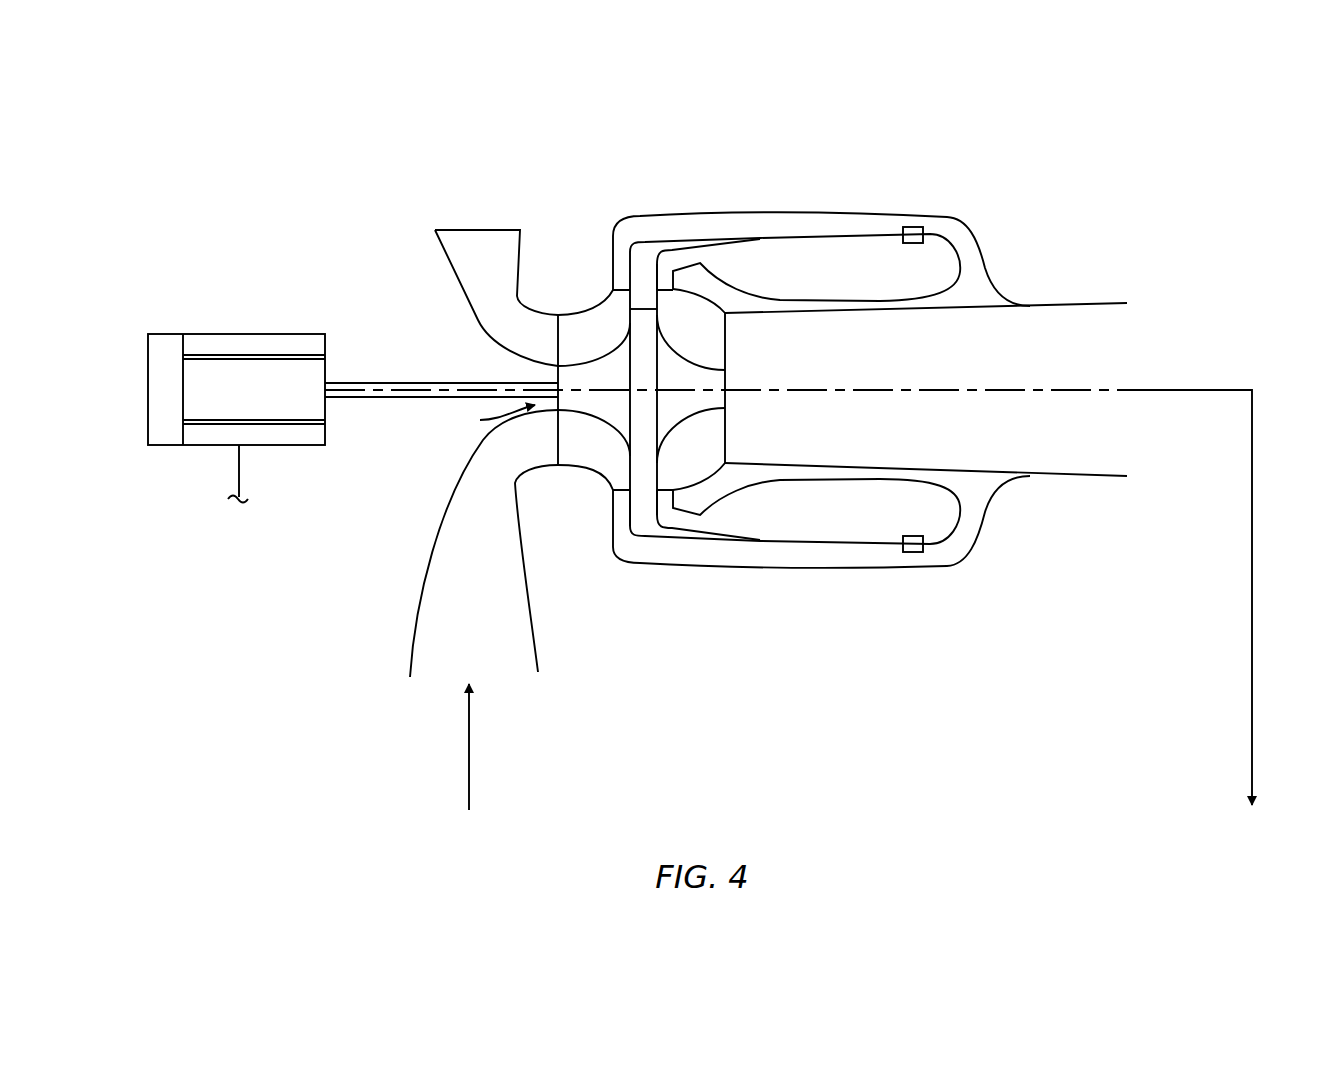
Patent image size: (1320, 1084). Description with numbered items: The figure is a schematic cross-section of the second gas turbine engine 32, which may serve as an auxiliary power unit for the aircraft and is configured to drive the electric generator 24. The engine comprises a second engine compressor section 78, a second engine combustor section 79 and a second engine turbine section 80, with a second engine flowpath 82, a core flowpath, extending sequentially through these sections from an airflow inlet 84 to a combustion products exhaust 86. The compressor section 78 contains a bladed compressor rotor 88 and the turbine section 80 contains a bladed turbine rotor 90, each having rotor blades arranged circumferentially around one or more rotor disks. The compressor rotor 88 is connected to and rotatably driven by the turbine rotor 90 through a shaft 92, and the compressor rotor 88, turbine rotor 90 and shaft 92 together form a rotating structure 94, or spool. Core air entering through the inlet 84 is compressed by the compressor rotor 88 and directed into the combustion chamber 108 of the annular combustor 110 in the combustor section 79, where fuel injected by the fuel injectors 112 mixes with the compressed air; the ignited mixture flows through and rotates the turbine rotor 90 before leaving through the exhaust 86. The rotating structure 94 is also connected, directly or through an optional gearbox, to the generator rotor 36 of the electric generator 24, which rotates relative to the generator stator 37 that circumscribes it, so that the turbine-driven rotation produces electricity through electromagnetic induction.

The electric generator 24 is at (183, 334).
The second gas turbine engine 32 is at (1150, 179).
The generator rotor 36 is at (255, 403).
The generator stator 37 is at (252, 334).
The second engine compressor section 78 is at (586, 303).
The second engine combustor section 79 is at (885, 224).
The second engine turbine section 80 is at (718, 300).
The second engine flowpath 82 is at (462, 583).
The airflow inlet 84 is at (469, 810).
The combustion products exhaust 86 is at (1252, 783).
The compressor rotor 88 is at (558, 377).
The turbine rotor 90 is at (727, 378).
The shaft 92 is at (640, 396).
The rotating structure 94 is at (492, 419).
The combustion chamber 108 is at (800, 278).
The combustor 110 is at (812, 233).
The fuel injectors 112 is at (913, 227).